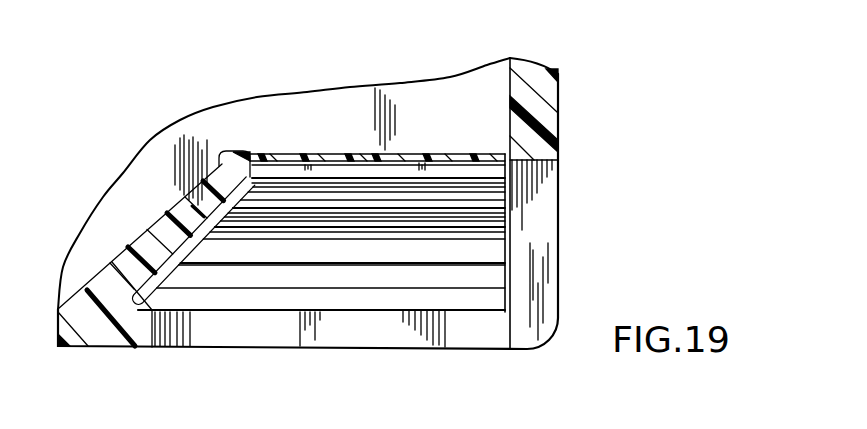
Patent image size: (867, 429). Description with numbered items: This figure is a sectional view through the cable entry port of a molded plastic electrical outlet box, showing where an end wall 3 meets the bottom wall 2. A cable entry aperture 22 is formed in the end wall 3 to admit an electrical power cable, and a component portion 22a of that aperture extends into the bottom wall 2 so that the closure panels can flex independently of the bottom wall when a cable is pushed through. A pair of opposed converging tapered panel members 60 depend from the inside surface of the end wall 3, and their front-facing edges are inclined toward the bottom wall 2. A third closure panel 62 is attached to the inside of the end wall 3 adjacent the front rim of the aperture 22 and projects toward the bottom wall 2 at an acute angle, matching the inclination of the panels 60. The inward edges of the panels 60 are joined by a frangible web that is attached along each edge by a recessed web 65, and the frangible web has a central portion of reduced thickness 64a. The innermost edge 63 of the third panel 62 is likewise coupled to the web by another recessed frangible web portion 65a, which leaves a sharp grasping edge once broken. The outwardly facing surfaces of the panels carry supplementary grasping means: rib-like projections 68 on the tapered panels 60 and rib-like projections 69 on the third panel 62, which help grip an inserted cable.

The bottom wall 2 is at (545, 115).
The end wall 3 is at (112, 333).
The cable entry aperture 22 is at (200, 328).
The aperture component portion 22a is at (541, 200).
The tapered panel member 60 is at (342, 277).
The third closure panel 62 is at (141, 244).
The innermost edge 63 is at (253, 152).
The central portion of reduced thickness 64a is at (463, 153).
The recessed web 65 is at (340, 173).
The frangible web portion 65a is at (222, 152).
The rib-like projections 68 is at (350, 218).
The rib-like projections 69 is at (190, 207).